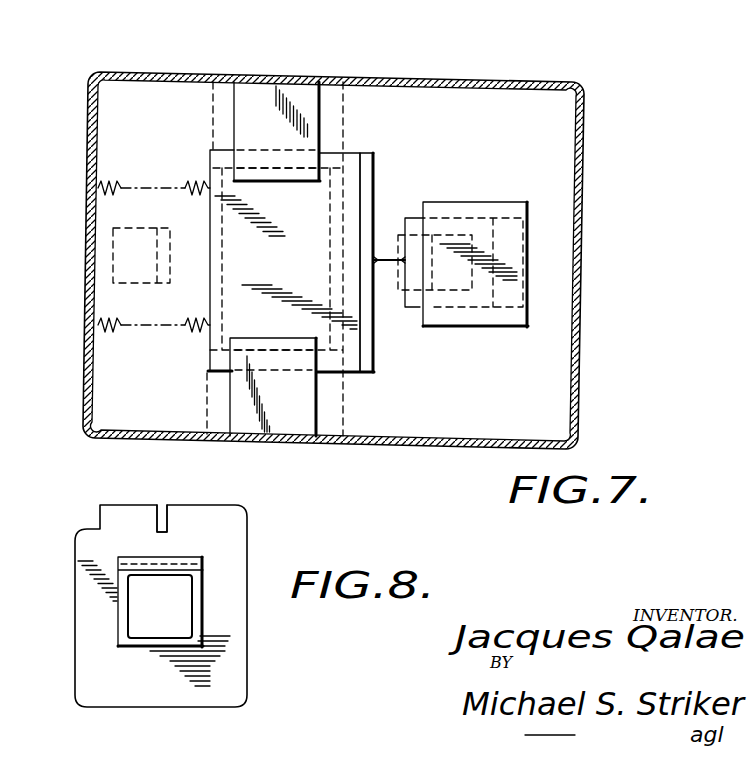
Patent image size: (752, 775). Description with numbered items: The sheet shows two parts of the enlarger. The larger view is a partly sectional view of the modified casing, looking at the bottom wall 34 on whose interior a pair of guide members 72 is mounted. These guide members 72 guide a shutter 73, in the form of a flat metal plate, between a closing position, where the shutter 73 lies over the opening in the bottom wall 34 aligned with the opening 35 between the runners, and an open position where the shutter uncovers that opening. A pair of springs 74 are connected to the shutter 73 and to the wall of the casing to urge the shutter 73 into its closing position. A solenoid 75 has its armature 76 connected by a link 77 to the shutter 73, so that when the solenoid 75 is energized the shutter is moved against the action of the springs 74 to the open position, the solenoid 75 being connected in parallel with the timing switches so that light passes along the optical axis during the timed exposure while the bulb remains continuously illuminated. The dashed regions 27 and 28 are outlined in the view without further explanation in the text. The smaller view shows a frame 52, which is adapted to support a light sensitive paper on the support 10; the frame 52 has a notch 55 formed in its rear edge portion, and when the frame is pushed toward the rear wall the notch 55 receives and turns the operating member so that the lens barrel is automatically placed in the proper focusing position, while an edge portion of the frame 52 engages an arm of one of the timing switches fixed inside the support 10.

In FIG. 7, the bottom wall 34 is at (560, 141).
In FIG. 7, the opening 35 is at (230, 188).
In FIG. 7, the guide members 72 is at (308, 92).
In FIG. 7, the shutter 73 is at (368, 160).
In FIG. 7, the springs 74 is at (113, 178).
In FIG. 7, the recess 27 is at (118, 262).
In FIG. 7, the solenoid 75 is at (498, 203).
In FIG. 7, the armature 76 is at (418, 218).
In FIG. 7, the link 77 is at (375, 265).
In FIG. 7, the recess 28 is at (467, 293).
In FIG. 8, the support 10 is at (98, 516).
In FIG. 8, the notch 55 is at (170, 520).
In FIG. 8, the frame 52 is at (227, 623).